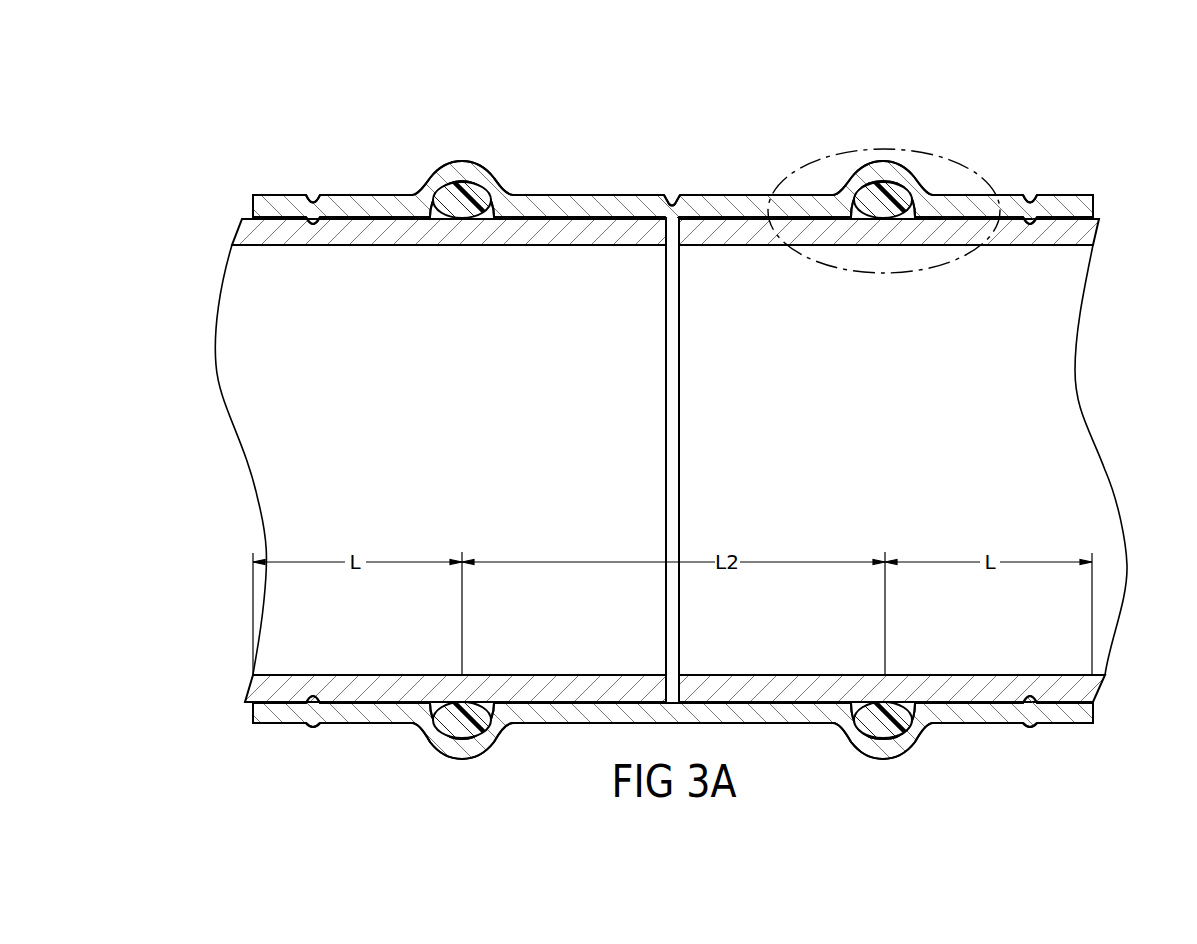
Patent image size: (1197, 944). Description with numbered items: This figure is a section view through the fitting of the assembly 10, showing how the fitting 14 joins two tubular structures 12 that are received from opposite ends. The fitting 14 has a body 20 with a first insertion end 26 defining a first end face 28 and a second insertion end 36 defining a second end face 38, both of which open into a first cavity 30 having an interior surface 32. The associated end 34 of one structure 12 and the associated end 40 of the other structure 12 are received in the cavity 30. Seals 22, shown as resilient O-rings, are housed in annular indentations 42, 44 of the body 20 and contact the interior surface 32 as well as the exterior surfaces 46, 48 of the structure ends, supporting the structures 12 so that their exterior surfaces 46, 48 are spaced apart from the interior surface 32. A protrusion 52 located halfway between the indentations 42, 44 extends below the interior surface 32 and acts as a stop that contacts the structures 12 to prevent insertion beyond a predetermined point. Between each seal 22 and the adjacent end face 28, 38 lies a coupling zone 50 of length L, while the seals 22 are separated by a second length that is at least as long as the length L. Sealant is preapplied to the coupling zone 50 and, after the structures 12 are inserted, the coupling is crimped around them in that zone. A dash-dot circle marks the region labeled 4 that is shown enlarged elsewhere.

The detail region of FIG. 4 is at (972, 160).
The assembly 10 is at (326, 116).
The structure 12 is at (248, 230).
The fitting 14 is at (639, 205).
The body 20 is at (343, 205).
The seal 22 is at (460, 190).
The first insertion end 26 is at (1108, 195).
The first end face 28 is at (1093, 720).
The first cavity 30 is at (236, 706).
The interior surface 32 is at (290, 219).
The associated end 34 is at (679, 612).
The second insertion end 36 is at (242, 195).
The second end face 38 is at (253, 721).
The associated end 40 is at (667, 310).
The annular indentation 42 is at (858, 173).
The annular indentation 44 is at (475, 170).
The exterior surface 46 is at (733, 703).
The exterior surface 48 is at (590, 703).
The coupling zone 50 is at (331, 678).
The protrusion 52 is at (673, 197).